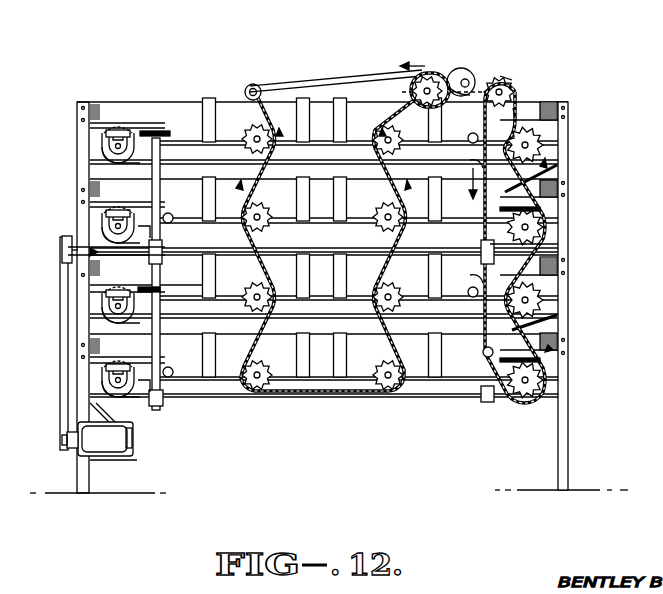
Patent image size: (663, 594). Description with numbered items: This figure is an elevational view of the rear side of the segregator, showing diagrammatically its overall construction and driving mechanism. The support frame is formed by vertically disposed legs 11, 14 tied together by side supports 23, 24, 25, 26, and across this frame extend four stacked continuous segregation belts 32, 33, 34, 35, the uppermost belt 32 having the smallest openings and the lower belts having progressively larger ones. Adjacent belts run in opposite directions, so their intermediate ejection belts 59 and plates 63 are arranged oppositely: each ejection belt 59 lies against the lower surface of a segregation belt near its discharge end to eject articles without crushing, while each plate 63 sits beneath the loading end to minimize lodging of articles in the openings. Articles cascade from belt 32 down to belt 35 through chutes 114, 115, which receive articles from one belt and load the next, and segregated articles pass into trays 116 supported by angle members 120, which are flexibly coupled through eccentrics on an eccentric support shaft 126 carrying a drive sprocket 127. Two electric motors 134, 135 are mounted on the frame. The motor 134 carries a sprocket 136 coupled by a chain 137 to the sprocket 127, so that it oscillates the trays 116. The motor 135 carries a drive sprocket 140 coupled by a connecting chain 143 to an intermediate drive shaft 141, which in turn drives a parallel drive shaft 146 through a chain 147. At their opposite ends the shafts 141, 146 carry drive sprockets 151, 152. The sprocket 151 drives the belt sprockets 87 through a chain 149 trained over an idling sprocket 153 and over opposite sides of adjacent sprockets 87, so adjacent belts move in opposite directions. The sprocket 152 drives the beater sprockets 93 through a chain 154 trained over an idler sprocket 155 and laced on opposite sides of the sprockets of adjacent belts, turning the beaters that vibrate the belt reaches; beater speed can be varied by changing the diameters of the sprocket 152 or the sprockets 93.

The leg 11 is at (82, 147).
The leg 14 is at (566, 140).
The side support 23 is at (552, 110).
The side support 24 is at (552, 190).
The side support 25 is at (552, 273).
The side support 26 is at (552, 347).
The segregation belt 32 is at (130, 163).
The segregation belt 33 is at (105, 225).
The segregation belt 34 is at (123, 322).
The segregation belt 35 is at (148, 400).
The intermediate continuous ejection belt 59 is at (148, 233).
The plate 63 is at (147, 132).
The sprocket 87 is at (533, 142).
The sprocket 93 is at (250, 146).
The chute 114 is at (105, 256).
The chute 115 is at (543, 170).
The article receiving tray 116 is at (405, 160).
The angle member 120 is at (160, 402).
The eccentric support shaft 126 is at (543, 247).
The drive sprocket 127 is at (62, 241).
The electric motor 134 is at (118, 447).
The electric motor 135 is at (477, 80).
The sprocket 136 is at (70, 452).
The chain 137 is at (60, 358).
The drive sprocket 140 is at (471, 74).
The intermediate drive shaft 141 is at (507, 78).
The connecting chain 143 is at (497, 72).
The drive shaft 146 is at (430, 83).
The chain 147 is at (430, 93).
The chain 149 is at (500, 122).
The drive sprocket 151 is at (512, 113).
The drive sprocket 152 is at (420, 66).
The idling sprocket 153 is at (485, 353).
The chain 154 is at (305, 77).
The idler sprocket 155 is at (250, 87).